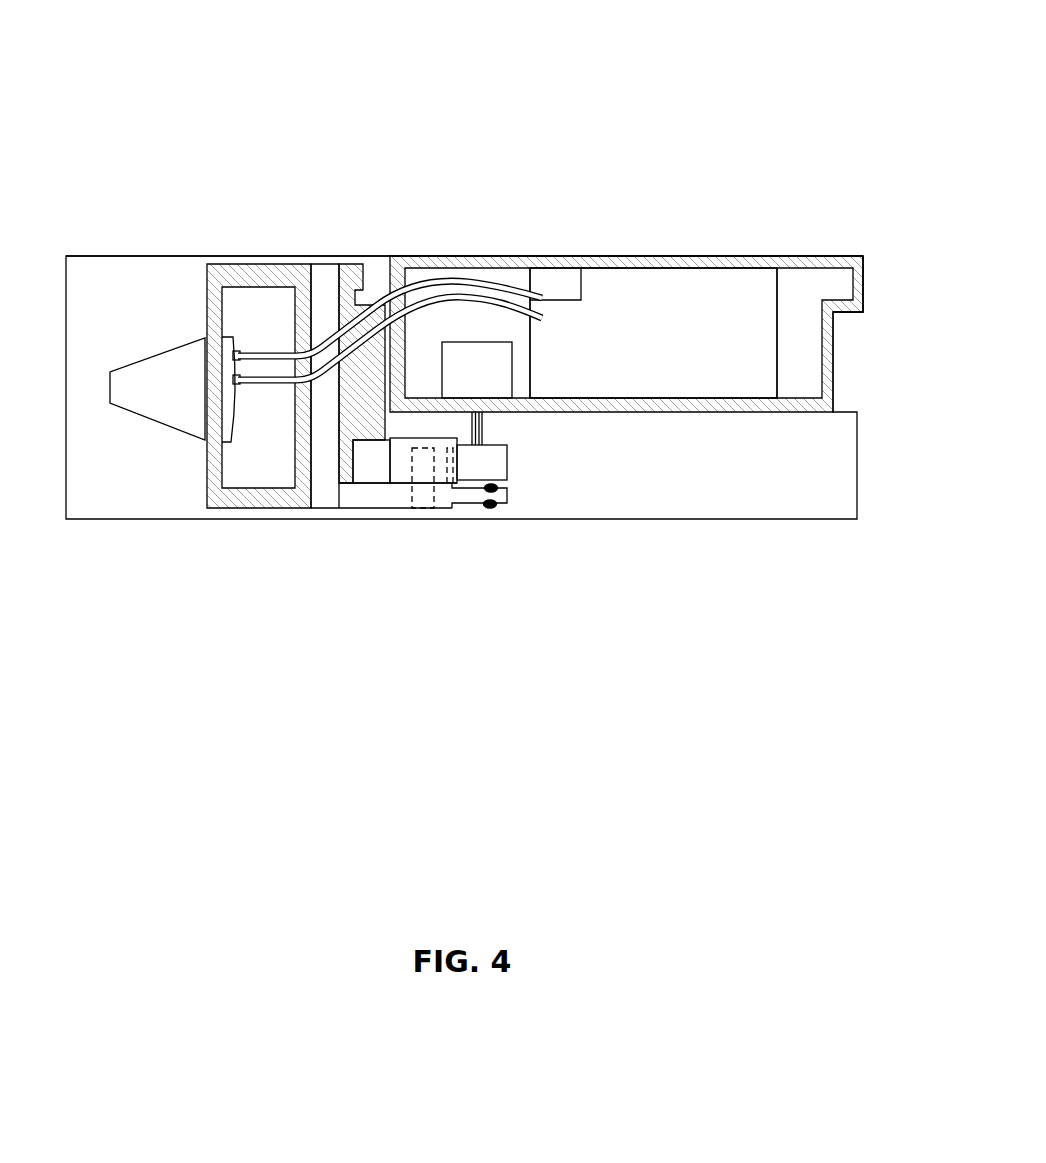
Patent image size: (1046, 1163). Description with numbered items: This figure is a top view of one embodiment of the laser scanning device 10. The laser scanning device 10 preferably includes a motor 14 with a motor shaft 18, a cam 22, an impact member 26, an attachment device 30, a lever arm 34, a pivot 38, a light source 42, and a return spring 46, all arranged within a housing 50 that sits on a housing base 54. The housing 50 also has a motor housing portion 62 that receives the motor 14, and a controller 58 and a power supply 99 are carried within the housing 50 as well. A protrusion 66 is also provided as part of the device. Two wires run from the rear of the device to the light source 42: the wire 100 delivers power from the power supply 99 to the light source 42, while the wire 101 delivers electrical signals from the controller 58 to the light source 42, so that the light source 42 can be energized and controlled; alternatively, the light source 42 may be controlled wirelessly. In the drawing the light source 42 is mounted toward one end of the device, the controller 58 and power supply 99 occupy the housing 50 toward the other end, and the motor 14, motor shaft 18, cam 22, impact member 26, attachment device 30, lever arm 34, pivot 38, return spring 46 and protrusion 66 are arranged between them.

The laser scanning device 10 is at (705, 135).
The motor 14 is at (462, 350).
The motor shaft 18 is at (485, 427).
The cam 22 is at (500, 468).
The impact member 26 is at (398, 468).
The attachment device 30 is at (424, 500).
The lever arm 34 is at (253, 505).
The pivot 38 is at (325, 488).
The light source 42 is at (167, 400).
The return spring 46 is at (492, 506).
The housing 50 is at (353, 310).
The housing base 54 is at (107, 290).
The controller 58 is at (683, 293).
The motor housing portion 62 is at (812, 258).
The protrusion 66 is at (452, 467).
The power supply 99 is at (563, 280).
The wire 100 is at (470, 283).
The wire 101 is at (282, 378).